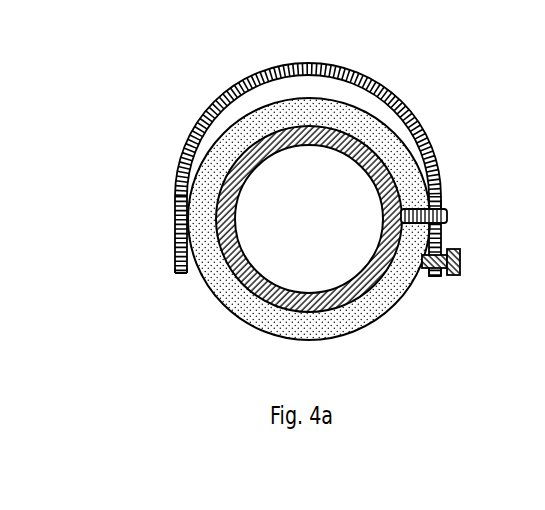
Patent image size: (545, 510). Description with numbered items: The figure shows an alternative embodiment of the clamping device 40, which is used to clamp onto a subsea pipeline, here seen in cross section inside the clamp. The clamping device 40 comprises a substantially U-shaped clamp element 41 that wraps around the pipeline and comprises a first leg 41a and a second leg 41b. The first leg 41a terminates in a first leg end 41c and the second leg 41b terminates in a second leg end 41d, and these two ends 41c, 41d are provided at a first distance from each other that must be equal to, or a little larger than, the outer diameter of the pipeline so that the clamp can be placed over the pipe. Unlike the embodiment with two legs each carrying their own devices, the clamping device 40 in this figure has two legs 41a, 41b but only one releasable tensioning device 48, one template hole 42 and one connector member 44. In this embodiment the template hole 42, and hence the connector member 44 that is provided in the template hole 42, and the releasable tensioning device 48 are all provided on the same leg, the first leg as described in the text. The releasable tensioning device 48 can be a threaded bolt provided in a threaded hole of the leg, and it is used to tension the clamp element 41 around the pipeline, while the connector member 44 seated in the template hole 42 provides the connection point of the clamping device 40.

The clamping device 40 is at (321, 183).
The clamp element 41 is at (243, 80).
The first leg 41a is at (175, 237).
The second leg 41b is at (437, 238).
The first leg end 41c is at (176, 274).
The second leg end 41d is at (437, 277).
The template hole 42 is at (438, 205).
The connector member 44 is at (445, 213).
The releasable tensioning device 48 is at (460, 258).